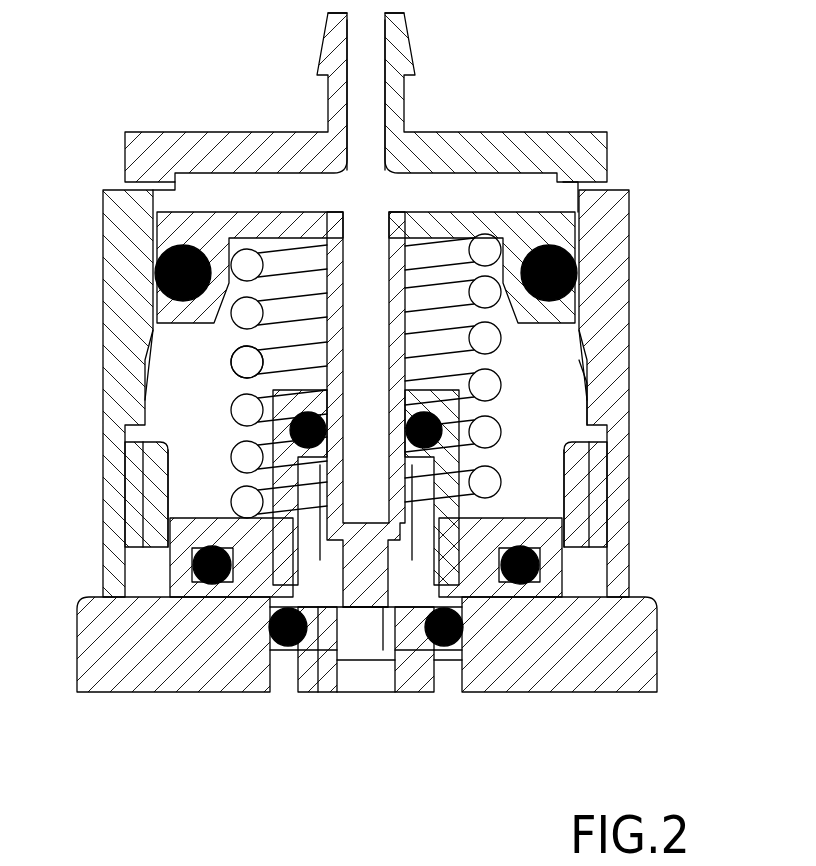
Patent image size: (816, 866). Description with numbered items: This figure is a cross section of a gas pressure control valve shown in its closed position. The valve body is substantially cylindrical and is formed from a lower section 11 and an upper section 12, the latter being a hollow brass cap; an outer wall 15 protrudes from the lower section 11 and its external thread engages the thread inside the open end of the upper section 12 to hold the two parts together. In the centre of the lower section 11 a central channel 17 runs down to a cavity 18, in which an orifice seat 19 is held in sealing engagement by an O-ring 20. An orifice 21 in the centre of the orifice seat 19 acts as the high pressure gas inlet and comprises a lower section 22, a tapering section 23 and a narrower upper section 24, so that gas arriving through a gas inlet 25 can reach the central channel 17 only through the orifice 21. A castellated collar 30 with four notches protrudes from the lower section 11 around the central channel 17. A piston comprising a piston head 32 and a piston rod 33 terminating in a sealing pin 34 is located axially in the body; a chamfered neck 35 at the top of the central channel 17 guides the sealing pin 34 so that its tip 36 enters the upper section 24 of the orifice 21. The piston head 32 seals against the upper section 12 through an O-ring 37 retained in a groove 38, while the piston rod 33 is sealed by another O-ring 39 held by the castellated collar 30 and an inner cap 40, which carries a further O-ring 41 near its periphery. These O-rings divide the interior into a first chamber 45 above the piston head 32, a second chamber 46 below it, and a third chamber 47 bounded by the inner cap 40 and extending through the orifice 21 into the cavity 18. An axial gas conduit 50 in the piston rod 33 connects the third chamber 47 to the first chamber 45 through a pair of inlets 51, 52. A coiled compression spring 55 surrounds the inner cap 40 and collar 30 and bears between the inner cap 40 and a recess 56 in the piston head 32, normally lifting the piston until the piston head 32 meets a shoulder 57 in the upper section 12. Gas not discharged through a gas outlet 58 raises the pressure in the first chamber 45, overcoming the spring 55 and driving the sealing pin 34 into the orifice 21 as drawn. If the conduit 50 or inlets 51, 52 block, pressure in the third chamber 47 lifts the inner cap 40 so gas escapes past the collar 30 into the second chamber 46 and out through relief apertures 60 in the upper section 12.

The lower section 11 is at (632, 665).
The upper section 12 is at (612, 310).
The outer wall 15 is at (470, 512).
The central channel 17 is at (340, 575).
The cavity 18 is at (268, 650).
The orifice seat 19 is at (430, 663).
The O-ring 20 is at (467, 633).
The orifice 21 is at (415, 670).
The lower section 22 is at (383, 655).
The tapering section 23 is at (318, 690).
The upper section 24 is at (330, 668).
The gas inlet 25 is at (365, 688).
The castellated collar 30 is at (455, 478).
The piston head 32 is at (575, 218).
The piston rod 33 is at (180, 207).
The sealing pin 34 is at (345, 570).
The chamfered neck 35 is at (280, 553).
The tip 36 is at (467, 660).
The O-ring 37 is at (160, 270).
The groove 38 is at (570, 240).
The O-ring 39 is at (442, 428).
The inner cap 40 is at (280, 478).
The O-ring 41 is at (545, 565).
The first chamber 45 is at (493, 187).
The second chamber 46 is at (584, 386).
The third chamber 47 is at (345, 545).
The axial gas conduit 50 is at (373, 290).
The inlet 51 is at (330, 487).
The inlet 52 is at (437, 520).
The coiled compression spring 55 is at (248, 362).
The recess 56 is at (502, 252).
The shoulder 57 is at (327, 327).
The gas outlet 58 is at (365, 123).
The relief apertures 60 is at (130, 407).